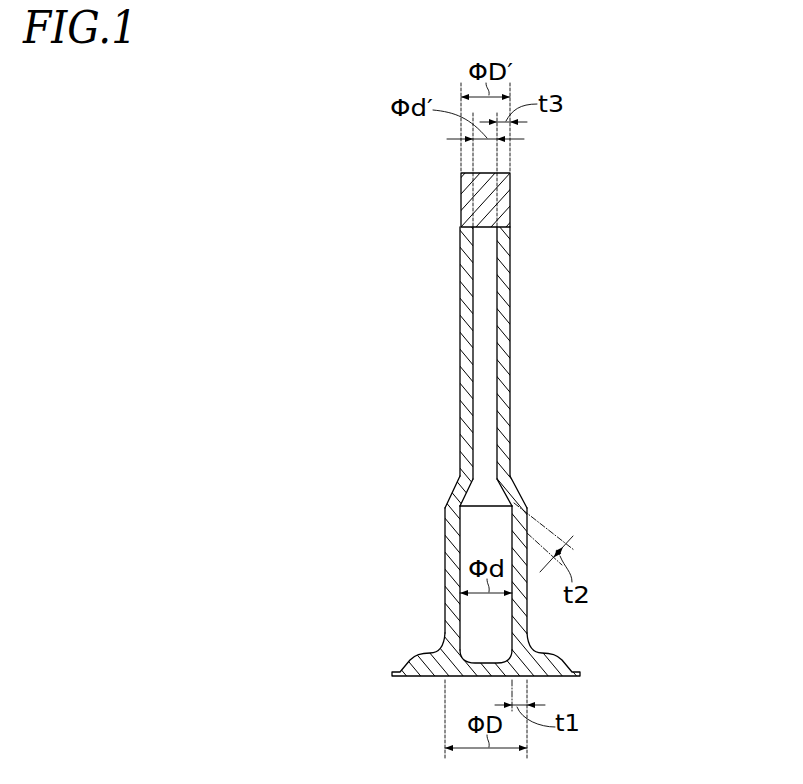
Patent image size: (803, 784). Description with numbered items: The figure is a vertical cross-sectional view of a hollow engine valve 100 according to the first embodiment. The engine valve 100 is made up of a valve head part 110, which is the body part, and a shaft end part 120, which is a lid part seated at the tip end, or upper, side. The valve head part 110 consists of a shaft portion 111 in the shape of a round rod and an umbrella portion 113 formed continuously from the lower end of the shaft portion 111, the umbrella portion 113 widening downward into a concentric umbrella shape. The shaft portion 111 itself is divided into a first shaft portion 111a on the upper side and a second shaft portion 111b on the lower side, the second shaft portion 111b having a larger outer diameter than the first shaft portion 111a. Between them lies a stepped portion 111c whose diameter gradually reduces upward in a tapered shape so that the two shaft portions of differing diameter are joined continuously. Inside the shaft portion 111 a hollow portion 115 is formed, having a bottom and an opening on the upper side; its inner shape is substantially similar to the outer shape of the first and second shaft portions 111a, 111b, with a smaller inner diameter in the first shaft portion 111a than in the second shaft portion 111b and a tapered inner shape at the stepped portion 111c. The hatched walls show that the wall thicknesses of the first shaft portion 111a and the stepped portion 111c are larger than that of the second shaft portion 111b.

The hollow engine valve 100 is at (410, 424).
The valve head part 110 is at (410, 438).
The shaft portion 111 is at (410, 438).
The first shaft portion 111a is at (460, 383).
The second shaft portion 111b is at (445, 552).
The stepped portion 111c is at (512, 490).
The umbrella portion 113 is at (548, 652).
The hollow portion 115 is at (473, 267).
The shaft end part 120 is at (510, 192).